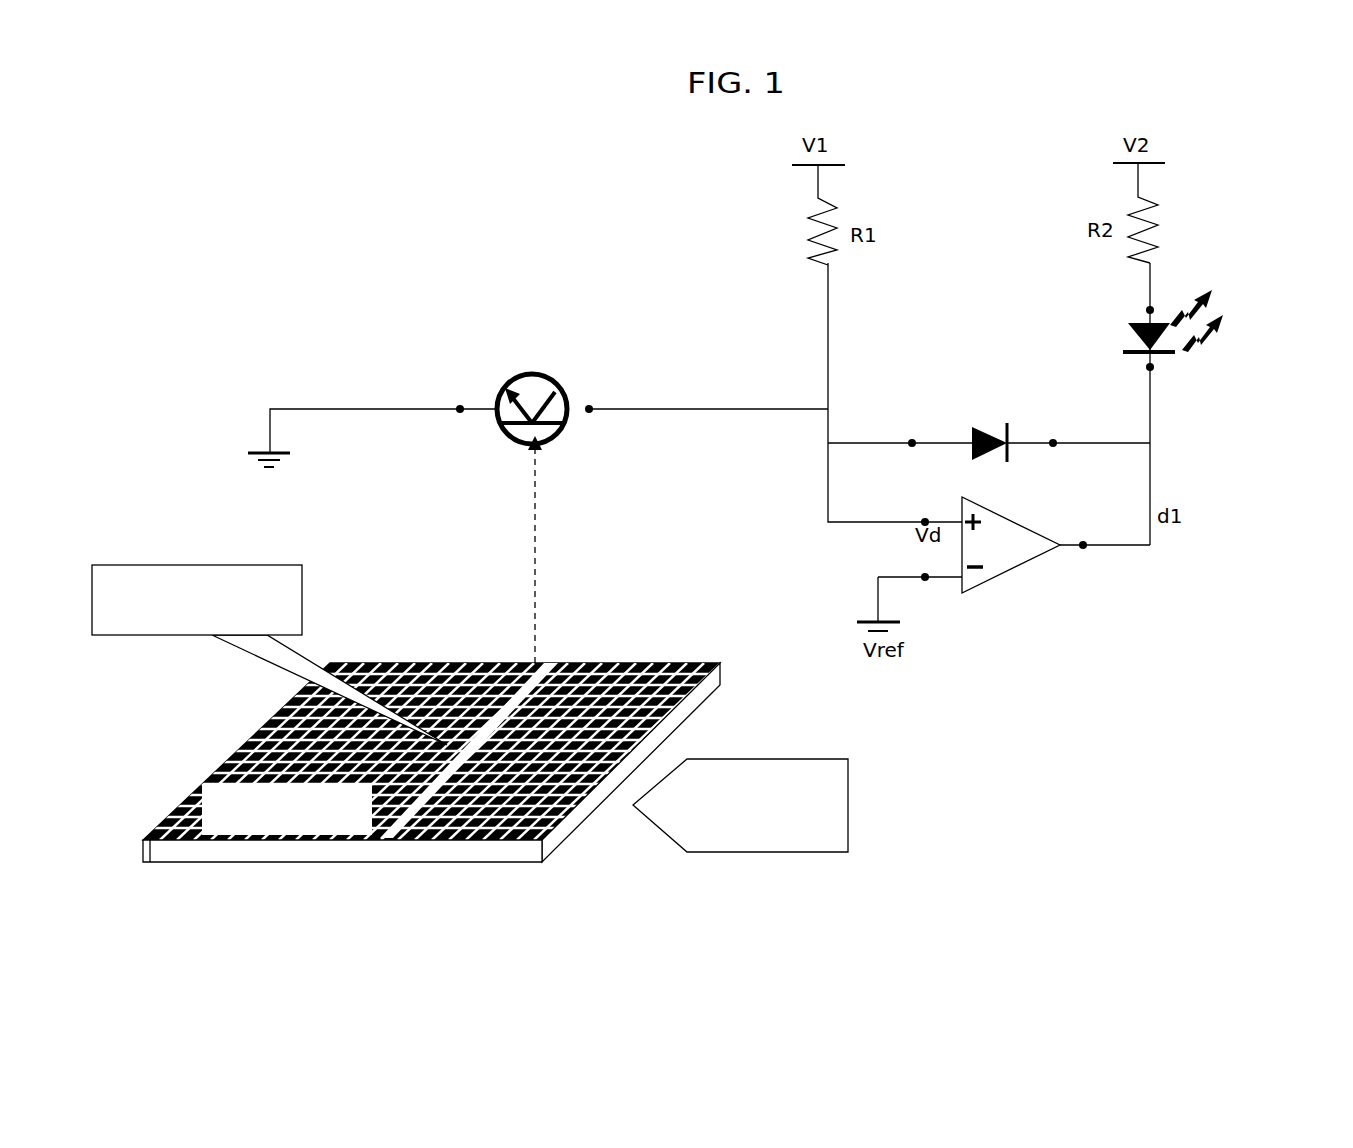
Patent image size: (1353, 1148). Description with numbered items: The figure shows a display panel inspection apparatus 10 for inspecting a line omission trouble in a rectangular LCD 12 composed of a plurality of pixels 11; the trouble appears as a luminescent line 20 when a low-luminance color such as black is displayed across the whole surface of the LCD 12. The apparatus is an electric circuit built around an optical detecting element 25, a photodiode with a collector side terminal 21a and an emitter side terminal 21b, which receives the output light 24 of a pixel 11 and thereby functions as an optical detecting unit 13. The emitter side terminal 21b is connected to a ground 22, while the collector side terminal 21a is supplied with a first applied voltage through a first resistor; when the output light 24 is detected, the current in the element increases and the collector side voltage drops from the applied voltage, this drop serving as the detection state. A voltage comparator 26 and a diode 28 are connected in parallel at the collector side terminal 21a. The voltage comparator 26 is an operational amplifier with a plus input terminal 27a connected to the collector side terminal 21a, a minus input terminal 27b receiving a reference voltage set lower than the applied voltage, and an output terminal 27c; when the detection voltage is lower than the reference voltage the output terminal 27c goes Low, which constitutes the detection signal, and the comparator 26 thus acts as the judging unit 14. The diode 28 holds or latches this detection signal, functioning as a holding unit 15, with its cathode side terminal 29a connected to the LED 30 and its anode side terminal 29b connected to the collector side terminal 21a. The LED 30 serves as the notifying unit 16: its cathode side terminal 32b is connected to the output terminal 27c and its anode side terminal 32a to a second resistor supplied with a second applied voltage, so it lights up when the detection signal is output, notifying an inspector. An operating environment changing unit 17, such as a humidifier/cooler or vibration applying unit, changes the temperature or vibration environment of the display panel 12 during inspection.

The display panel inspection apparatus 10 is at (709, 292).
The pixel 11 is at (148, 842).
The LCD (display panel) 12 is at (727, 680).
The optical detecting unit 13 is at (560, 427).
The judging unit 14 is at (1010, 570).
The holding unit 15 is at (990, 433).
The notifying unit 16 is at (1170, 320).
The operating environment changing unit 17 is at (856, 806).
The luminescent line 20 is at (387, 833).
The collector side terminal 21a is at (592, 398).
The emitter side terminal 21b is at (462, 398).
The ground 22 is at (290, 455).
The output light 24 is at (535, 540).
The optical detecting element 25 is at (605, 452).
The voltage comparator 26 is at (1111, 617).
The + input terminal 27a is at (927, 512).
The − input terminal 27b is at (927, 567).
The output terminal 27c is at (1086, 536).
The diode 28 is at (954, 397).
The cathode side terminal 29a is at (1054, 434).
The anode side terminal 29b is at (912, 434).
The LED 30 is at (1215, 273).
The anode side terminal 32a is at (1128, 310).
The cathode side terminal 32b is at (1129, 375).